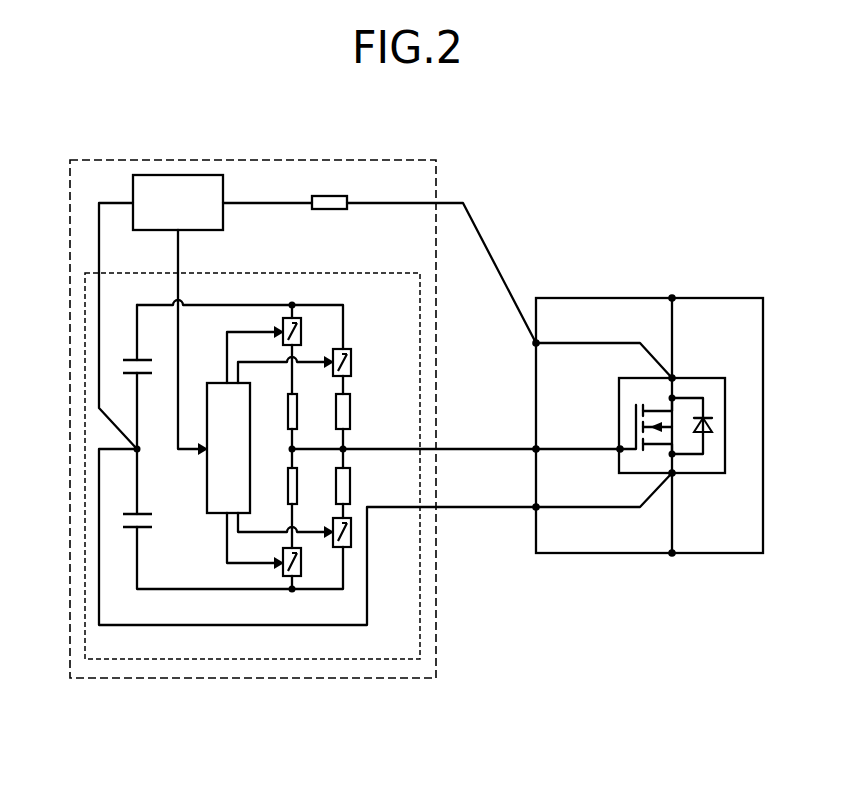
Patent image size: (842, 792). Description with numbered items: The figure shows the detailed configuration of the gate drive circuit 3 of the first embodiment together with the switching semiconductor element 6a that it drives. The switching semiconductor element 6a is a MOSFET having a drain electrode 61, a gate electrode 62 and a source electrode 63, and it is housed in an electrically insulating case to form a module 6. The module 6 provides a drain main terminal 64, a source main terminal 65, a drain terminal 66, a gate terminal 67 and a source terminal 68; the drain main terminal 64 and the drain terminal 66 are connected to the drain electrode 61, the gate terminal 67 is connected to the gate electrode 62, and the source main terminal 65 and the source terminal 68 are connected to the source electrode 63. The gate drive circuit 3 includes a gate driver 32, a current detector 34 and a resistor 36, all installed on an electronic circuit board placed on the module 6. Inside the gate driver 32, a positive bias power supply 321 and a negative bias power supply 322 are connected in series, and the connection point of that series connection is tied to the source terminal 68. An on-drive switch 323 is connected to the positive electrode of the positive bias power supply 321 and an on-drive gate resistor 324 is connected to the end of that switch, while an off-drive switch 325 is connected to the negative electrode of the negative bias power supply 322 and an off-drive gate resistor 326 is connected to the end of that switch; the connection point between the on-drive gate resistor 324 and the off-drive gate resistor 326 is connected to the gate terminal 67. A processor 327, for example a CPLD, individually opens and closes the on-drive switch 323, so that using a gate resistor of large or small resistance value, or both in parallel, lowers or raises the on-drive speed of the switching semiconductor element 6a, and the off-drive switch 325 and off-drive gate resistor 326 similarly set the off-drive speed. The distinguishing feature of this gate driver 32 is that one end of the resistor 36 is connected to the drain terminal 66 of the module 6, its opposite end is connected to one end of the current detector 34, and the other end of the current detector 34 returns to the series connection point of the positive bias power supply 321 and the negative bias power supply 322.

The gate drive circuit 3 is at (398, 160).
The gate driver 32 is at (85, 291).
The current detector 34 is at (180, 175).
The resistor 36 is at (330, 196).
The positive bias power supply 321 is at (125, 360).
The negative bias power supply 322 is at (125, 514).
The on-drive switch 323 is at (350, 355).
The on-drive gate resistor 324 is at (350, 414).
The off-drive switch 325 is at (351, 535).
The off-drive gate resistor 326 is at (350, 490).
The processor 327 is at (212, 513).
The module 6 is at (592, 298).
The switching semiconductor element 6a is at (725, 383).
The drain electrode 61 is at (674, 377).
The gate electrode 62 is at (619, 447).
The source electrode 63 is at (674, 475).
The drain main terminal 64 is at (668, 297).
The source main terminal 65 is at (672, 555).
The drain terminal 66 is at (536, 345).
The gate terminal 67 is at (535, 447).
The source terminal 68 is at (536, 509).